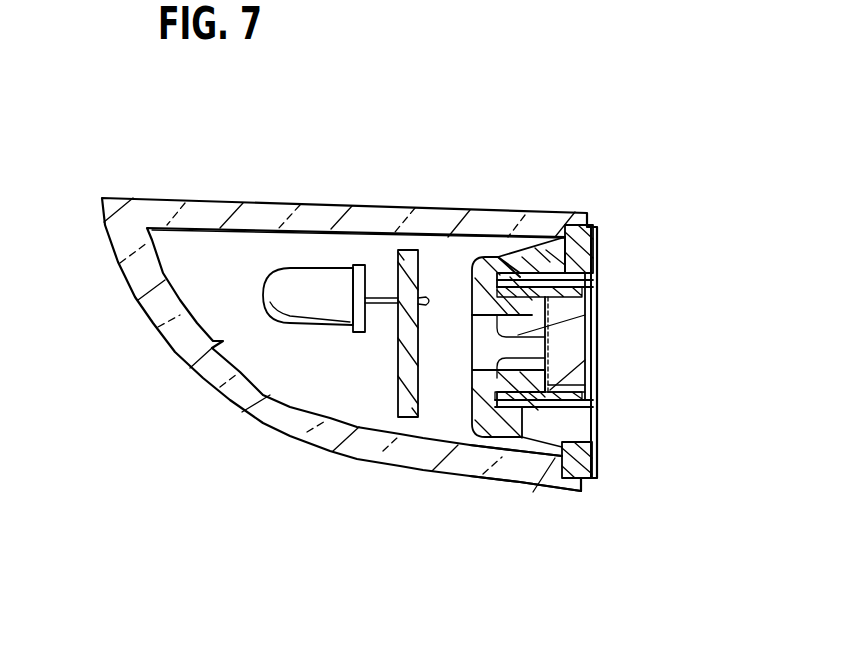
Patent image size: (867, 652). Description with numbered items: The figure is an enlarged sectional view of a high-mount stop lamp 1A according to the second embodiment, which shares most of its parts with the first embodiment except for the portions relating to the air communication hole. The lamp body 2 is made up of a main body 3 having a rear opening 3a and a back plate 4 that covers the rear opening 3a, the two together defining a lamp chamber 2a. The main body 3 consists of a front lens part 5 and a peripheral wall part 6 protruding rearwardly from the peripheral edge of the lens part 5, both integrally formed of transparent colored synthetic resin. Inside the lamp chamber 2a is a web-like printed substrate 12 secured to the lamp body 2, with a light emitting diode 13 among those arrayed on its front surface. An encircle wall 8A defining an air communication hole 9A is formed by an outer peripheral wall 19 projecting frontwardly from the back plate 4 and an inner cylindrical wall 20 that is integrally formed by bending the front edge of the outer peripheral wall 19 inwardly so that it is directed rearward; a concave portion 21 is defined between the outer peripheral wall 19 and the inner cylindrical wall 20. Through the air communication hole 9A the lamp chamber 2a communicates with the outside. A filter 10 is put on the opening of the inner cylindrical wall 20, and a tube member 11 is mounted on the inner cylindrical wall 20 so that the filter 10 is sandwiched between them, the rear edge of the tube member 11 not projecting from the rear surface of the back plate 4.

The high-mount stop lamp 1A is at (453, 81).
The lamp body 2 is at (685, 132).
The lamp chamber 2a is at (247, 290).
The main body 3 is at (560, 225).
The rear opening 3a is at (595, 448).
The back plate 4 is at (600, 226).
The lens part 5 is at (152, 325).
The peripheral wall part 6 is at (533, 492).
The encircle wall 8A is at (473, 265).
The air communication hole 9A is at (595, 318).
The filter 10 is at (594, 349).
The tube member 11 is at (595, 400).
The printed substrate 12 is at (403, 418).
The light emitting diode 13 is at (302, 303).
The outer peripheral wall 19 is at (505, 255).
The inner cylindrical wall 20 is at (595, 365).
The concave portion 21 is at (517, 442).